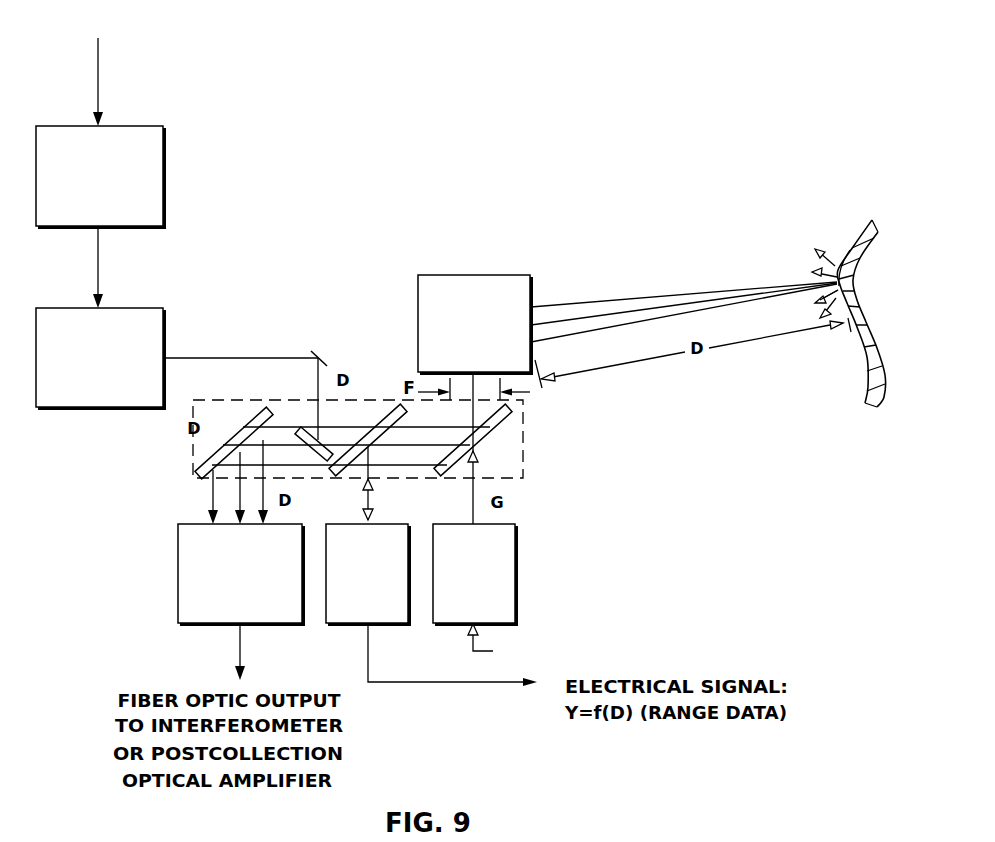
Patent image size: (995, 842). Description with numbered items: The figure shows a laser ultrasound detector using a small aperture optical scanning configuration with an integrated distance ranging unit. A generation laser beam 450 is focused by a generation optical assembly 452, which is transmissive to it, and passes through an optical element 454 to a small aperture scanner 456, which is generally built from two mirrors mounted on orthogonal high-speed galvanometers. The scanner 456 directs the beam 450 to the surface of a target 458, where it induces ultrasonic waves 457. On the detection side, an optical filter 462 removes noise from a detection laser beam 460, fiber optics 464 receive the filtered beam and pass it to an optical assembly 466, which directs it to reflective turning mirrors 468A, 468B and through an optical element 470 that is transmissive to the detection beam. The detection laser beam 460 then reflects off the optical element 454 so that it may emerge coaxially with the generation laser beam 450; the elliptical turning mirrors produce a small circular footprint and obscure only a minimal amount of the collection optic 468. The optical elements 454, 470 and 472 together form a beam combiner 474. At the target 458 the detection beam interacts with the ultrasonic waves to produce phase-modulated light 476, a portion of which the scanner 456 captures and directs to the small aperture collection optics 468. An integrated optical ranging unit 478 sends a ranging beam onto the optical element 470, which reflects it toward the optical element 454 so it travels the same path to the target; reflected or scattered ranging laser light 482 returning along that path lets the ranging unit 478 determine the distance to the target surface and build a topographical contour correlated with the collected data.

The generation laser beam 450 is at (522, 641).
The generation optical assembly 452 is at (475, 574).
The optical element 454 is at (528, 409).
The small aperture scanner 456 is at (475, 399).
The ultrasonic waves 457 is at (872, 219).
The target 458 is at (863, 399).
The detection laser beam 460 is at (234, 357).
The optical filter 462 is at (100, 177).
The fiber optics 464 is at (121, 268).
The optical assembly 466 is at (100, 358).
The small aperture collection optics 468 is at (241, 602).
The reflective turning mirror 468A is at (333, 356).
The reflective turning mirror 468B is at (295, 428).
The optical element 470 is at (383, 408).
The optical element 472 is at (242, 428).
The beam combiner 474 is at (526, 441).
The phase-modulated light 476 is at (816, 250).
The integrated optical ranging unit 478 is at (431, 605).
The reflected or scattered ranging laser light 482 is at (813, 303).